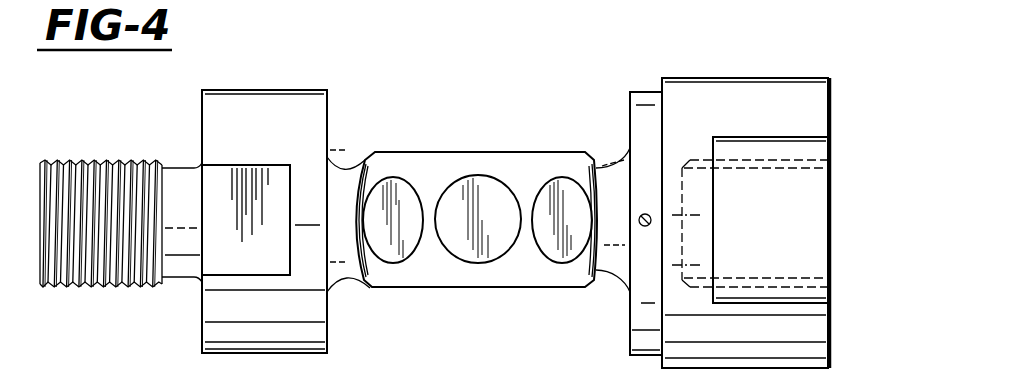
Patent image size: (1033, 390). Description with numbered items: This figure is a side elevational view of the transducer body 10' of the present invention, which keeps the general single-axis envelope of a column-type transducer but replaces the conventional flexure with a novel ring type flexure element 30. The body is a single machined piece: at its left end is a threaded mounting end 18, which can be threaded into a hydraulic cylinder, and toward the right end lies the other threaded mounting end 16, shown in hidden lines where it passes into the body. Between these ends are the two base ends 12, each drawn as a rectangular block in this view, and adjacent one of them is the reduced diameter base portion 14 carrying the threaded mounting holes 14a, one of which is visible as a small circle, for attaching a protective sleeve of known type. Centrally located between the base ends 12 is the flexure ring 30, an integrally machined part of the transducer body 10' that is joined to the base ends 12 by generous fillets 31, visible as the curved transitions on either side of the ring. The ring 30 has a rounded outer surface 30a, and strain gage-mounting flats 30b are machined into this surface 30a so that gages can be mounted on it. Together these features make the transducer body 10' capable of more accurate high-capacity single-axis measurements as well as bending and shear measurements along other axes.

The transducer body 10' is at (435, 234).
The base ends 12 is at (252, 104).
The reduced diameter base portion 14 is at (642, 118).
The threaded mounting holes 14a is at (644, 228).
The threaded mounting end 16 is at (774, 170).
The threaded mounting end 18 is at (99, 163).
The ring type flexure element 30 is at (484, 118).
The rounded outer surface 30a is at (415, 152).
The strain gage-mounting flat 30b is at (495, 195).
The fillets 31 is at (343, 178).